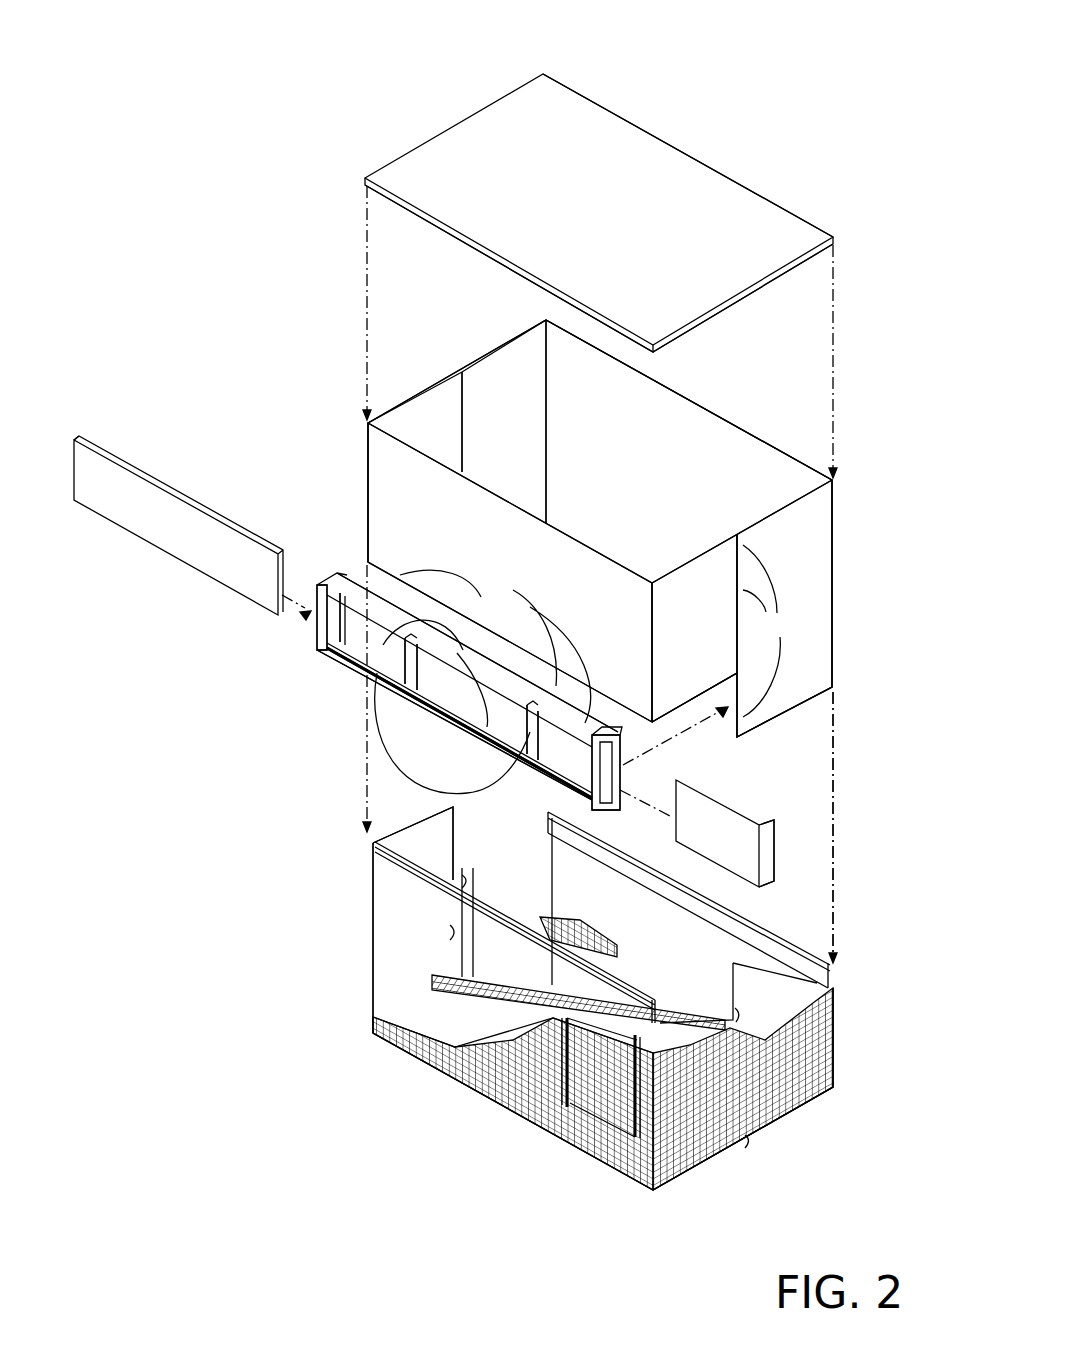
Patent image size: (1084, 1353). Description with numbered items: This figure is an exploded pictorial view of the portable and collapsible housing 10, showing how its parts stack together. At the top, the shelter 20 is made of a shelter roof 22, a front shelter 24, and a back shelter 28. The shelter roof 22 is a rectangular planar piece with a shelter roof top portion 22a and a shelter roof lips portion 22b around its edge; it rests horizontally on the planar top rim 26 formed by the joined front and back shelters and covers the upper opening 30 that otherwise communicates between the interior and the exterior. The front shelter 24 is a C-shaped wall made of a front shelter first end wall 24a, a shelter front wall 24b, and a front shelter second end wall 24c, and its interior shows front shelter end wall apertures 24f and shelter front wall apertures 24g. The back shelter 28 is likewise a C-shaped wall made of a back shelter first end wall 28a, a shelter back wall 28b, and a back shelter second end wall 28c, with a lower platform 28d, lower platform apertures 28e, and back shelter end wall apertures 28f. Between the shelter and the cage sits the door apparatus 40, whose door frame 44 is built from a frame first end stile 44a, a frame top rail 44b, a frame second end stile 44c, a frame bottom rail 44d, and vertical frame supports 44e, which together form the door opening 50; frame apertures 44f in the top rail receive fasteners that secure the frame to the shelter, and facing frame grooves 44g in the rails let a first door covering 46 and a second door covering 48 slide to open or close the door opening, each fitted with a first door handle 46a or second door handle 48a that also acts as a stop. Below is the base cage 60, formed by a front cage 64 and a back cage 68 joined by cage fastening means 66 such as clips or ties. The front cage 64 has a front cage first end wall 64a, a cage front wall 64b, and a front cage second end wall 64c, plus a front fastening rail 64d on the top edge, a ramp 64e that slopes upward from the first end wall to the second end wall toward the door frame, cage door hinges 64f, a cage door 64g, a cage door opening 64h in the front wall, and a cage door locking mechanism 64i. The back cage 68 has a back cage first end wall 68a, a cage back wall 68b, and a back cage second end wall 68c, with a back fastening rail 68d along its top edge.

The portable and collapsible housing 10 is at (291, 50).
The shelter 20 is at (870, 356).
The shelter roof 22 is at (699, 152).
The shelter roof top portion 22a is at (567, 104).
The shelter roof lips portion 22b is at (437, 223).
The front shelter 24 is at (360, 513).
The front shelter first end wall 24a is at (438, 382).
The shelter front wall 24b is at (388, 470).
The front shelter second end wall 24c is at (718, 622).
The front shelter end wall apertures 24f is at (460, 432).
The shelter front wall apertures 24g is at (553, 627).
The top rim 26 is at (388, 440).
The back shelter 28 is at (840, 587).
The back shelter first end wall 28a is at (502, 348).
The shelter back wall 28b is at (707, 418).
The back shelter second end wall 28c is at (805, 680).
The lower platform 28d is at (725, 713).
The lower platform apertures 28e is at (712, 705).
The back shelter end wall apertures 28f is at (745, 636).
The upper opening 30 is at (592, 430).
The door apparatus 40 is at (845, 896).
The door frame 44 is at (460, 732).
The frame first end stile 44a is at (342, 640).
The frame top rail 44b is at (352, 583).
The frame second end stile 44c is at (623, 790).
The frame bottom rail 44d is at (362, 670).
The frame supports 44e is at (387, 643).
The frame apertures 44f is at (473, 653).
The frame grooves 44g is at (580, 785).
The first door covering 46 is at (707, 815).
The first door handle 46a is at (770, 832).
The second door covering 48 is at (160, 502).
The second door handle 48a is at (78, 442).
The door opening 50 is at (453, 790).
The base cage 60 is at (246, 912).
The front cage 64 is at (368, 953).
The front cage first end wall 64a is at (412, 1005).
The cage front wall 64b is at (427, 1060).
The front cage second end wall 64c is at (693, 1168).
The front fastening rail 64d is at (375, 845).
The ramp 64e is at (562, 988).
The cage door hinges 64f is at (532, 1122).
The cage door 64g is at (565, 1140).
The cage door opening 64h is at (600, 1167).
The cage door locking mechanism 64i is at (647, 1052).
The cage fastening means 66 is at (487, 870).
The back cage 68 is at (840, 1031).
The back cage first end wall 68a is at (543, 899).
The cage back wall 68b is at (633, 925).
The back cage second end wall 68c is at (812, 1105).
The back fastening rail 68d is at (745, 918).